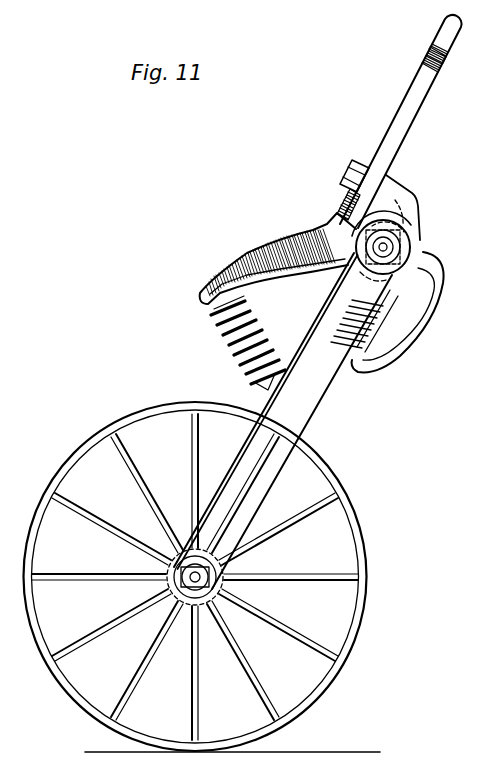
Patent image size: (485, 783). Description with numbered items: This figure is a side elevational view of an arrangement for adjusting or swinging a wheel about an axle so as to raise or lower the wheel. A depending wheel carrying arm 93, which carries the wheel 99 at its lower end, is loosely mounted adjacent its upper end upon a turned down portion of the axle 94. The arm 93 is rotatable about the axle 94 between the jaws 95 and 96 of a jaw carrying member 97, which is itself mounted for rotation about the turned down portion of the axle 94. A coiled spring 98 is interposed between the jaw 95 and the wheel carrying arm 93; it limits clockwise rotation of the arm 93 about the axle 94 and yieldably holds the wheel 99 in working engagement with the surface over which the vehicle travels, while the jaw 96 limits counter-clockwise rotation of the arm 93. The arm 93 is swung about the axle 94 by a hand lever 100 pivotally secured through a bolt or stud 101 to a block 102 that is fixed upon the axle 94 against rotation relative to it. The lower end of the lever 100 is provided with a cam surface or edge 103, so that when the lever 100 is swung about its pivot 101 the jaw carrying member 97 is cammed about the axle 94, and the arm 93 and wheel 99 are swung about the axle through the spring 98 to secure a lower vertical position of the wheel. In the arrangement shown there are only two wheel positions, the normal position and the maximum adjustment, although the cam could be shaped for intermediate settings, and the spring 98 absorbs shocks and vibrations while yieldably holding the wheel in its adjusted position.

The wheel carrying arm 93 is at (298, 405).
The axle 94 is at (418, 224).
The jaw 95 is at (222, 262).
The jaw 96 is at (384, 368).
The jaw carrying member 97 is at (422, 237).
The coiled spring 98 is at (222, 333).
The wheel 99 is at (297, 700).
The hand lever 100 is at (390, 125).
The bolt or stud 101 is at (342, 173).
The block 102 is at (402, 187).
The cam surface or edge 103 is at (343, 205).